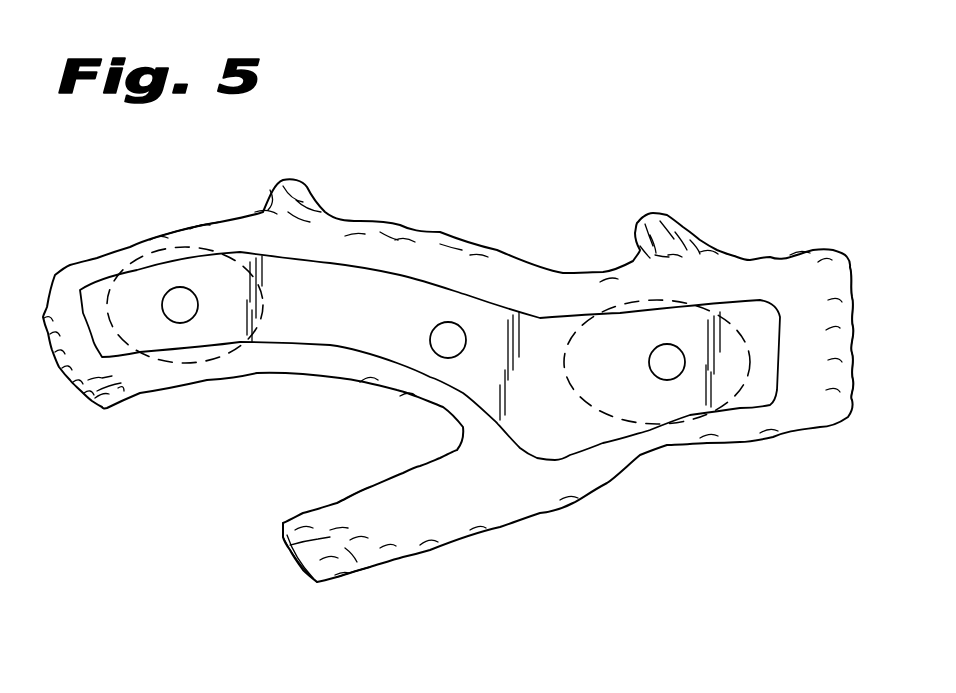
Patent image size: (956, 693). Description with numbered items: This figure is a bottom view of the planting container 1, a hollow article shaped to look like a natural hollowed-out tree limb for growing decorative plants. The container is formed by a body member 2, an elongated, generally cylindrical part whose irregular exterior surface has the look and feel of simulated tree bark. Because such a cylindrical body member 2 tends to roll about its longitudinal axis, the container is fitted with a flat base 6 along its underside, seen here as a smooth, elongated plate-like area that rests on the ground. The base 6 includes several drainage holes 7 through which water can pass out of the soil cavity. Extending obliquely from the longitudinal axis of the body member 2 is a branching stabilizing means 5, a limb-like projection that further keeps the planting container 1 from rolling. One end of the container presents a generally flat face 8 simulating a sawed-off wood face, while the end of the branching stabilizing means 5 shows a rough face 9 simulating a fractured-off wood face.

The planting container 1 is at (534, 231).
The body member 2 is at (432, 230).
The stabilizing means 5 is at (400, 533).
The flat base 6 is at (312, 320).
The drainage holes 7 is at (180, 318).
The flat face 8 is at (847, 296).
The rough face 9 is at (282, 546).